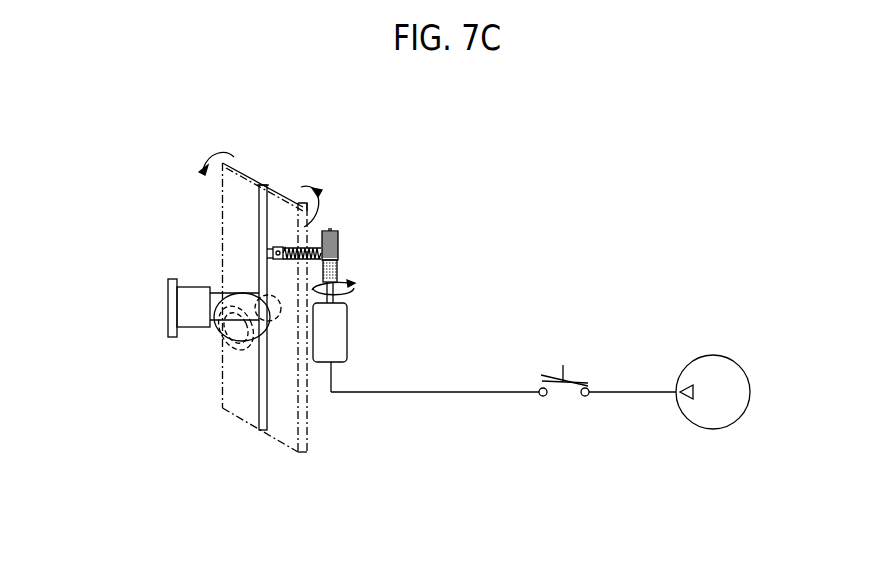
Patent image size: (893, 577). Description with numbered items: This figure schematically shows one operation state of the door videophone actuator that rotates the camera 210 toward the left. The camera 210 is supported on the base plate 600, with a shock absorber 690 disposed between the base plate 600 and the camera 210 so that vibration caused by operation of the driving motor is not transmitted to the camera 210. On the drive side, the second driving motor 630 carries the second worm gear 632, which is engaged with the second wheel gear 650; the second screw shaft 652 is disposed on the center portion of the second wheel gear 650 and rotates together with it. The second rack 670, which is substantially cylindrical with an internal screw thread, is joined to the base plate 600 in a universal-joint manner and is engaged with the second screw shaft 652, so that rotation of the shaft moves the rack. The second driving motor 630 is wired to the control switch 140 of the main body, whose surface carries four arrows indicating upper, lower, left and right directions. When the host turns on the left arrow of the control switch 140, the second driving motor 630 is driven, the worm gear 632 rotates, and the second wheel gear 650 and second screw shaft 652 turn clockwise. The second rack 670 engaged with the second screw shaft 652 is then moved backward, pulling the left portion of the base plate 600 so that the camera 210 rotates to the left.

The control switch 140 is at (743, 375).
The camera 210 is at (180, 309).
The base plate 600 is at (264, 431).
The second driving motor 630 is at (332, 336).
The second worm gear 632 is at (339, 269).
The second wheel gear 650 is at (339, 243).
The second screw shaft 652 is at (319, 250).
The second rack 670 is at (291, 250).
The shock absorber 690 is at (233, 298).